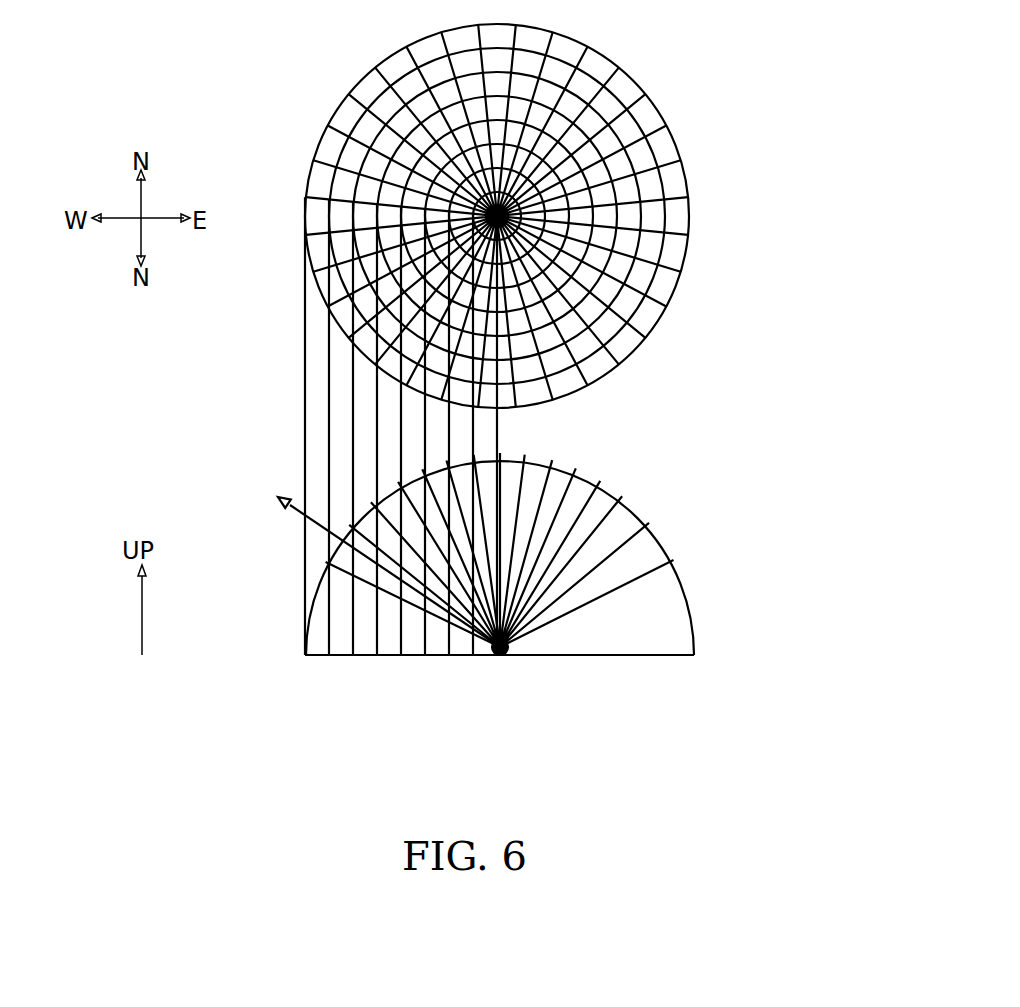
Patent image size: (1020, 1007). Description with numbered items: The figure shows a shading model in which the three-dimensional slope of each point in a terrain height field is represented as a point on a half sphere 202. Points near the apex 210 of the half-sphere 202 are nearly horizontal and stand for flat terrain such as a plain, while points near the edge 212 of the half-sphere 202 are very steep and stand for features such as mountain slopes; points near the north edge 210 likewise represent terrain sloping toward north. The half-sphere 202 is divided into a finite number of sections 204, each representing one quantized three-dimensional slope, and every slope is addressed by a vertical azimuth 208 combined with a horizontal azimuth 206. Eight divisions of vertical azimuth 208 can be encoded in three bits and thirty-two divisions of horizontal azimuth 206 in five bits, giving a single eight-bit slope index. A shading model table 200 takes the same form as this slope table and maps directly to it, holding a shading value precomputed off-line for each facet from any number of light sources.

The shading model table 200 is at (549, 209).
The half sphere 202 is at (528, 694).
The sections 204 is at (568, 55).
The horizontal azimuth 206 is at (692, 212).
The vertical azimuth 208 is at (668, 148).
The apex 210 is at (503, 462).
The edge 212 is at (693, 654).